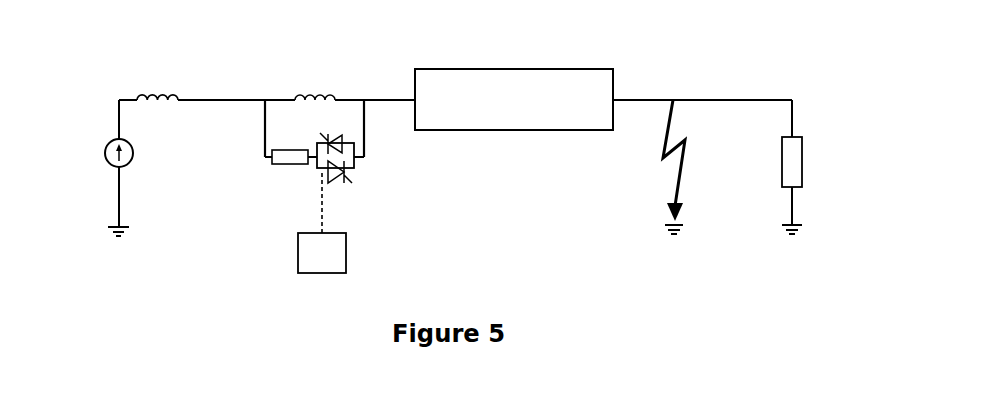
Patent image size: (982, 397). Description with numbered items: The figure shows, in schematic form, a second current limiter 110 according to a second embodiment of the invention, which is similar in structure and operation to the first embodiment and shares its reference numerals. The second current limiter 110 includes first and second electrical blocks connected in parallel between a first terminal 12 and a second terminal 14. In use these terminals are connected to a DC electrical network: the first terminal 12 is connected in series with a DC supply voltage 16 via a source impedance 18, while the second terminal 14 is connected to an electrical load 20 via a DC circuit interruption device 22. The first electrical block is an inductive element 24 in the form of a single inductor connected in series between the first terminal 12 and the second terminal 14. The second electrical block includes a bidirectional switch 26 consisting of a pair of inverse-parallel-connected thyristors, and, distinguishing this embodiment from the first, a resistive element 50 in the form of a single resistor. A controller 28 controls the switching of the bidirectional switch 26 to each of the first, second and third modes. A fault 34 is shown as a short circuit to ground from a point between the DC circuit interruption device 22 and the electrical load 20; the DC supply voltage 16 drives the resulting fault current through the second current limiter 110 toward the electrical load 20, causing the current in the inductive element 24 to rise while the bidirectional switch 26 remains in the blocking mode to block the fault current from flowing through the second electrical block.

The first terminal 12 is at (262, 104).
The second terminal 14 is at (369, 110).
The DC supply voltage 16 is at (109, 158).
The source impedance 18 is at (158, 90).
The electrical load 20 is at (796, 162).
The DC circuit interruption device 22 is at (514, 99).
The inductive element 24 is at (323, 91).
The bidirectional switch 26 is at (350, 172).
The controller 28 is at (322, 253).
The fault 34 is at (656, 163).
The resistive element 50 is at (283, 163).
The second current limiter 110 is at (279, 68).